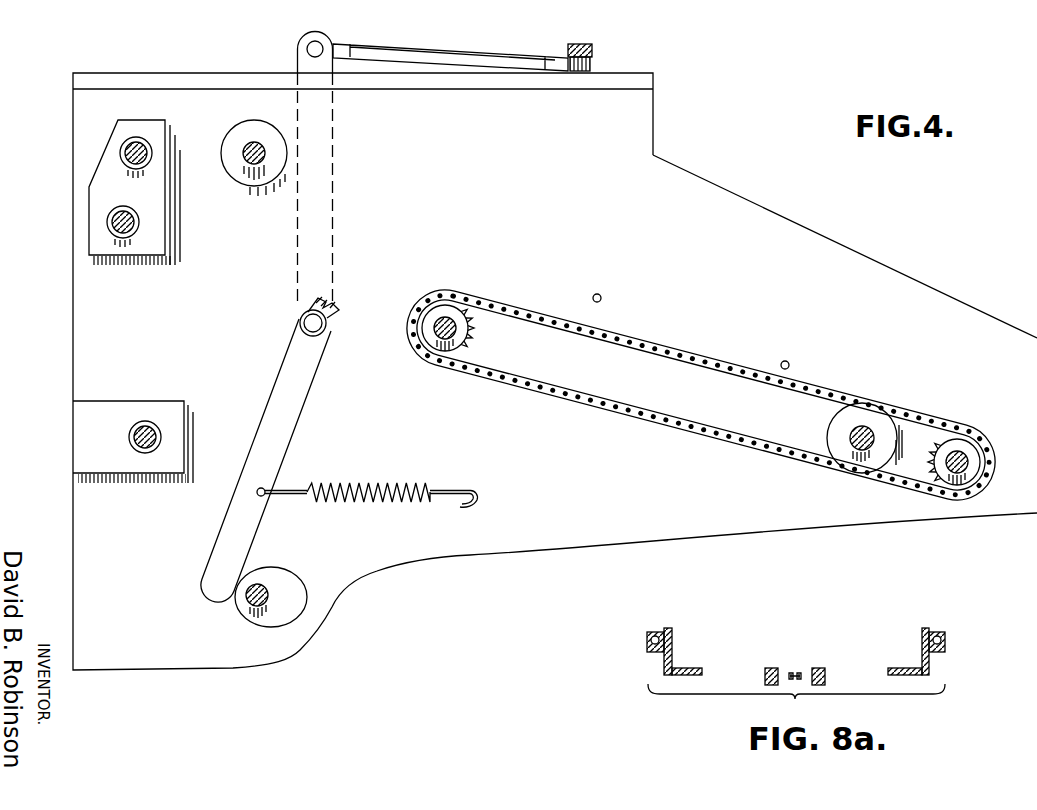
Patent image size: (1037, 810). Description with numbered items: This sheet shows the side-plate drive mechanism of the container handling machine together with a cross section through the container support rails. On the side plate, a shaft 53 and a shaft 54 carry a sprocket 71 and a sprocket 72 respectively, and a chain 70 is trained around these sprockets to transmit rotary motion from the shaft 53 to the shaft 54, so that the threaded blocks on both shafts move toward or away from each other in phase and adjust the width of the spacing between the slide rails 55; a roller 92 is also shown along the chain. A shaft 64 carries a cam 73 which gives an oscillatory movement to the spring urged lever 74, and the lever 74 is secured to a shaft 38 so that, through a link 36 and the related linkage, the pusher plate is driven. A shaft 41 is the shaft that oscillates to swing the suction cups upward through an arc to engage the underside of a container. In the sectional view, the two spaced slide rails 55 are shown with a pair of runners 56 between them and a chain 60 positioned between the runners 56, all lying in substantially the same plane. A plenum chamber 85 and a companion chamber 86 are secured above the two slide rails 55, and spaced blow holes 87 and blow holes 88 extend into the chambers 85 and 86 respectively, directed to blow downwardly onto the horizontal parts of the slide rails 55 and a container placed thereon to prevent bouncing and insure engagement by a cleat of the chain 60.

In FIG. 4, the link 36 is at (447, 48).
In FIG. 4, the shaft 41 is at (142, 222).
In FIG. 4, the shaft 38 is at (300, 323).
In FIG. 4, the lever 74 is at (296, 366).
In FIG. 4, the cam 73 is at (273, 578).
In FIG. 4, the shaft 64 is at (247, 607).
In FIG. 4, the chain 70 is at (712, 412).
In FIG. 4, the shaft 53 is at (440, 320).
In FIG. 4, the sprocket 71 is at (478, 341).
In FIG. 4, the roller 92 is at (848, 437).
In FIG. 4, the shaft 54 is at (966, 460).
In FIG. 4, the sprocket 72 is at (958, 440).
In FIG. 8A, the companion chamber 86 is at (653, 633).
In FIG. 8A, the blow holes 88 is at (674, 656).
In FIG. 8A, the slide rails 55 is at (664, 670).
In FIG. 8A, the runners 56 is at (768, 668).
In FIG. 8A, the chain 60 is at (797, 671).
In FIG. 8A, the blow holes 87 is at (925, 656).
In FIG. 8A, the plenum chamber 85 is at (941, 633).